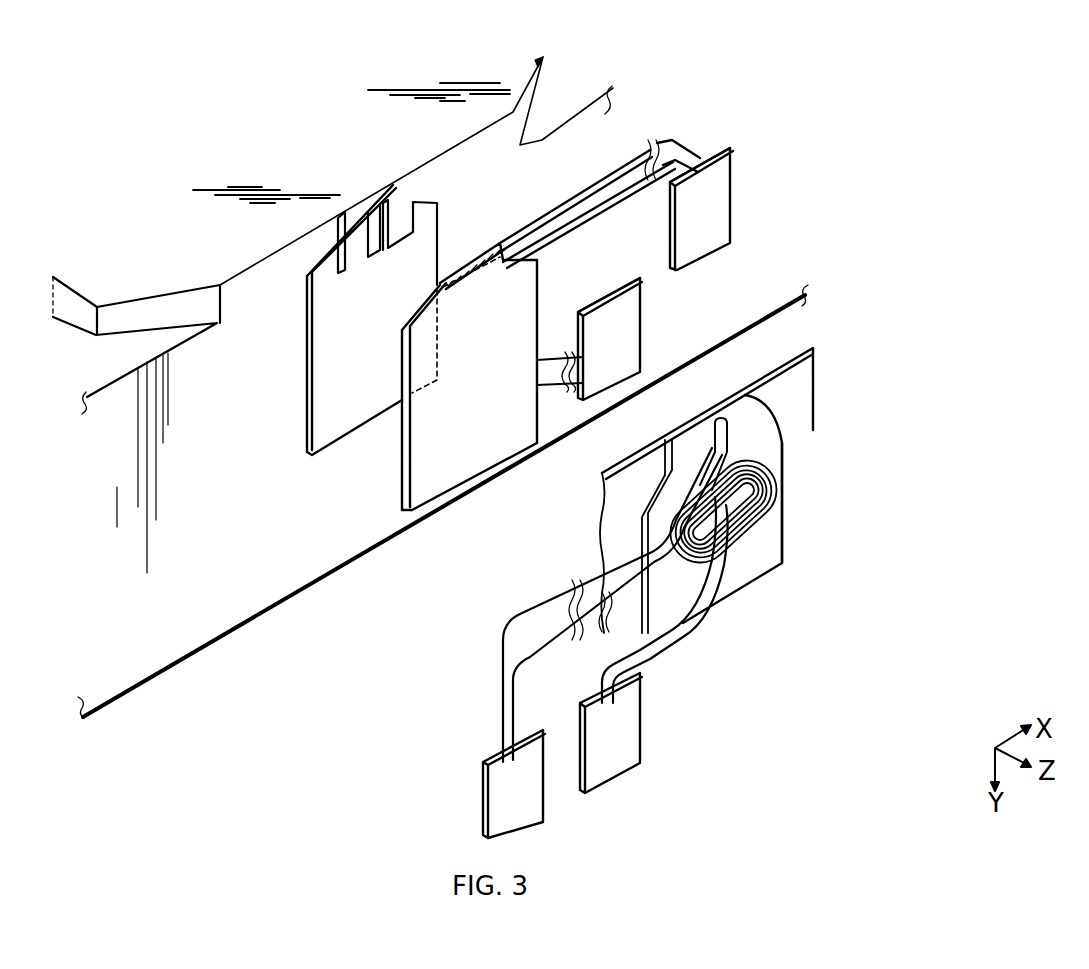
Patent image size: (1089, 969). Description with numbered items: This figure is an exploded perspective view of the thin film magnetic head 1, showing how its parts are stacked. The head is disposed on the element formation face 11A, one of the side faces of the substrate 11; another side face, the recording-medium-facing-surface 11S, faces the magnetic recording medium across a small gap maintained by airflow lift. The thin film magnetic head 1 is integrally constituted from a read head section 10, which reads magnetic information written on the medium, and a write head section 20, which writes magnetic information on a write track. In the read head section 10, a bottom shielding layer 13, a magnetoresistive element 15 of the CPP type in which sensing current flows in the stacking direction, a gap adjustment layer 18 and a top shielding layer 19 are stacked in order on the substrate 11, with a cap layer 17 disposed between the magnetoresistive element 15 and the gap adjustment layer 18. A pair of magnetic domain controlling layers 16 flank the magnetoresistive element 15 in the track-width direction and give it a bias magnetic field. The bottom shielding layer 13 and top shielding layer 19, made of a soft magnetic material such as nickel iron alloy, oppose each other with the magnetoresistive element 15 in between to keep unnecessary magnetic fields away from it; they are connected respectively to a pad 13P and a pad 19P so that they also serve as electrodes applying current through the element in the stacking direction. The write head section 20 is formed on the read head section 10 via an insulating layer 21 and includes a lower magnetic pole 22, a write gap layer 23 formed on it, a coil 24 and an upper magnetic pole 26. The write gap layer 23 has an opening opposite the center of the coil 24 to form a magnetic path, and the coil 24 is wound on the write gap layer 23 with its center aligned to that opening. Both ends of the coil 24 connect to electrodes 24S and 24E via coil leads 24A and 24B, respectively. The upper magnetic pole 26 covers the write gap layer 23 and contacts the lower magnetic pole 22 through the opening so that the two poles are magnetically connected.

The thin film magnetic head 1 is at (920, 40).
The read head section 10 is at (813, 43).
The substrate 11 is at (208, 617).
The element formation face 11A is at (461, 176).
The recording-medium-facing-surface 11S is at (288, 162).
The bottom shielding layer 13 is at (427, 223).
The pad 13P is at (707, 243).
The magnetoresistive element 15 is at (470, 222).
The magnetic domain controlling layers 16 is at (410, 217).
The cap layer 17 is at (440, 263).
The gap adjustment layer 18 is at (400, 347).
The top shielding layer 19 is at (640, 278).
The pad 19P is at (636, 327).
The write head section 20 is at (873, 430).
The insulating layer 21 is at (810, 413).
The lower magnetic pole 22 is at (773, 452).
The write gap layer 23 is at (777, 448).
The coil 24 is at (768, 514).
The coil lead 24A is at (547, 617).
The coil lead 24B is at (668, 637).
The electrode 24E is at (630, 737).
The electrode 24S is at (497, 795).
The upper magnetic pole 26 is at (725, 493).